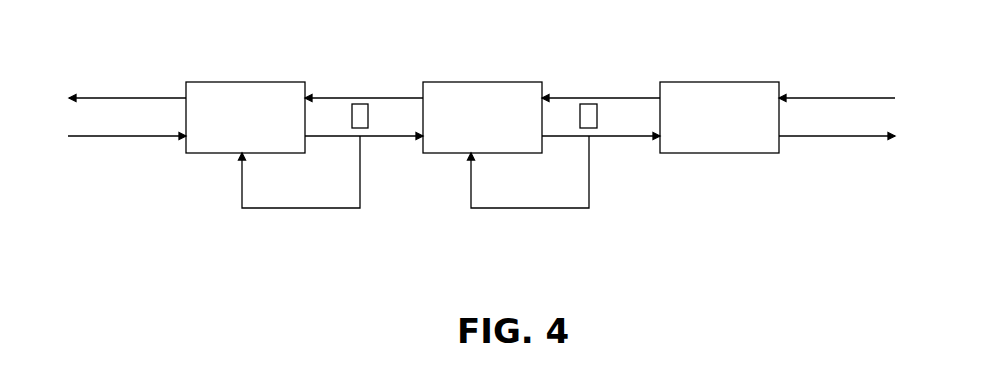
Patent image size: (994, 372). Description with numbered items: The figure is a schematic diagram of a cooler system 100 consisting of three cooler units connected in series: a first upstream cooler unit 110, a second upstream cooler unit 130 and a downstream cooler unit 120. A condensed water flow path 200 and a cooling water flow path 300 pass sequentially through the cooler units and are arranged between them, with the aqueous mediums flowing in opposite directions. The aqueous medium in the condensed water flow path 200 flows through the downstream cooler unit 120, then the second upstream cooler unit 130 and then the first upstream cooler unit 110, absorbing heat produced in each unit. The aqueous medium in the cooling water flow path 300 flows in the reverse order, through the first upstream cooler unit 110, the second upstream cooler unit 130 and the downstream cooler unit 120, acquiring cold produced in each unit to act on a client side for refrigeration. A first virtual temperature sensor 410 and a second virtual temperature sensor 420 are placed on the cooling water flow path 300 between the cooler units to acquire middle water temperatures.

The cooler system 100 is at (717, 177).
The first upstream cooler unit 110 is at (242, 113).
The downstream cooler unit 120 is at (707, 112).
The second upstream cooler unit 130 is at (470, 113).
The condensed water flow path 200 is at (808, 95).
The cooling water flow path 300 is at (818, 138).
The first virtual temperature sensor 410 is at (357, 121).
The second virtual temperature sensor 420 is at (590, 113).